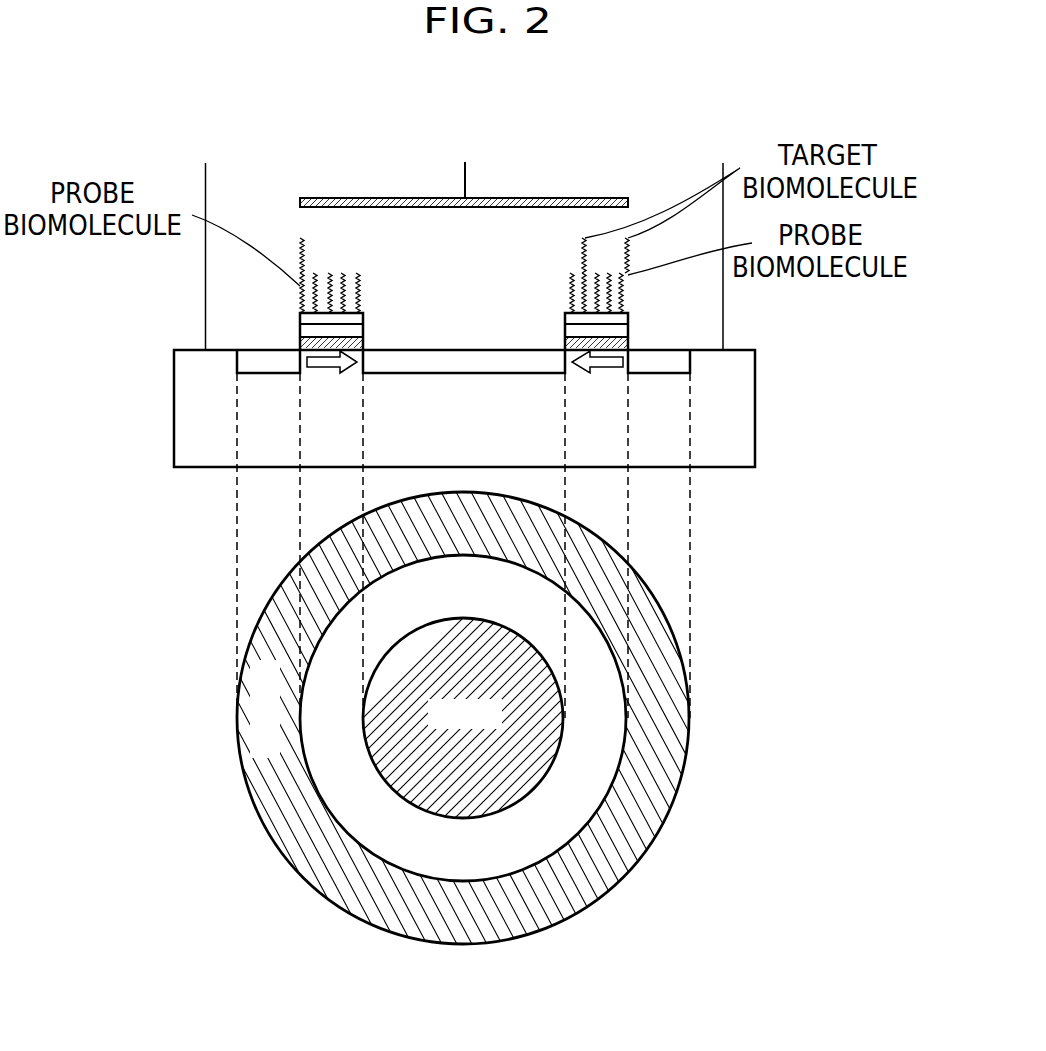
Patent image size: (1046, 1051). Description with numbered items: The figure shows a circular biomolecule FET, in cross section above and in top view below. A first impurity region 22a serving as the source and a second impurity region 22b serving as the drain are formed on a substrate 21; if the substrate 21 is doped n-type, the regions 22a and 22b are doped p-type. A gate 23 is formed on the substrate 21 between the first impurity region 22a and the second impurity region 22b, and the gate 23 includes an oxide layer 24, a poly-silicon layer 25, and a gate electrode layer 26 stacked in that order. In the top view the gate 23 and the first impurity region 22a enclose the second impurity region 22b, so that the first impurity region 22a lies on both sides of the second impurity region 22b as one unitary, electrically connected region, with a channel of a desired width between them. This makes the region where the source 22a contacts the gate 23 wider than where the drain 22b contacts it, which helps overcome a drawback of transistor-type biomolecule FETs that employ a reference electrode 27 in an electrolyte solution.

The substrate 21 is at (188, 431).
The first impurity region 22a is at (250, 358).
The second impurity region 22b is at (517, 358).
The gate 23 is at (156, 257).
The oxide layer 24 is at (316, 344).
The poly-silicon layer 25 is at (313, 331).
The gate electrode layer 26 is at (312, 318).
The reference electrode 27 is at (300, 201).